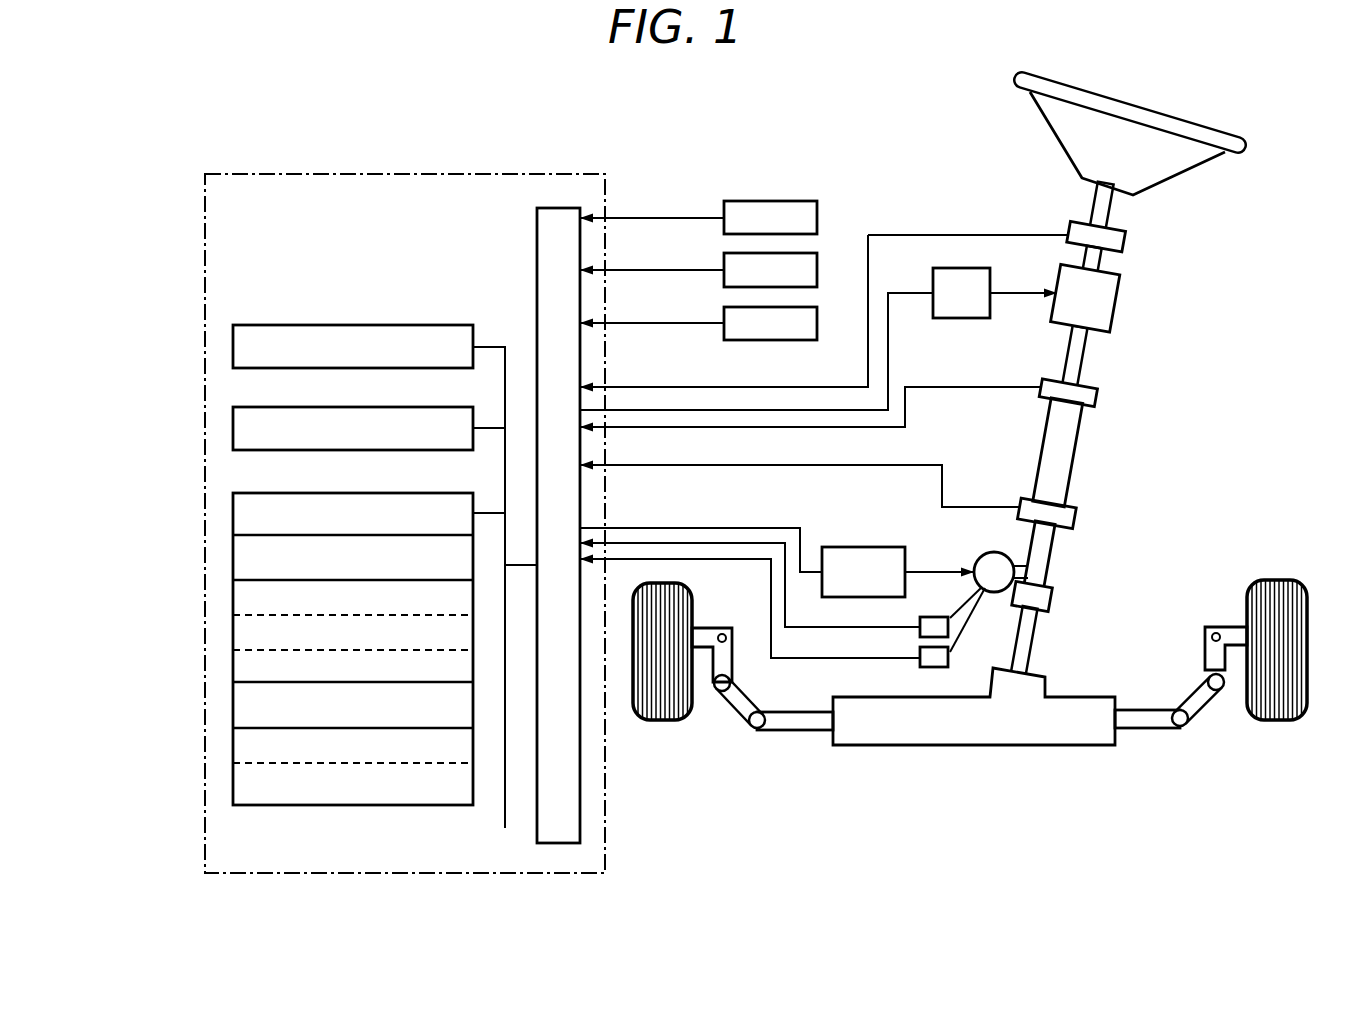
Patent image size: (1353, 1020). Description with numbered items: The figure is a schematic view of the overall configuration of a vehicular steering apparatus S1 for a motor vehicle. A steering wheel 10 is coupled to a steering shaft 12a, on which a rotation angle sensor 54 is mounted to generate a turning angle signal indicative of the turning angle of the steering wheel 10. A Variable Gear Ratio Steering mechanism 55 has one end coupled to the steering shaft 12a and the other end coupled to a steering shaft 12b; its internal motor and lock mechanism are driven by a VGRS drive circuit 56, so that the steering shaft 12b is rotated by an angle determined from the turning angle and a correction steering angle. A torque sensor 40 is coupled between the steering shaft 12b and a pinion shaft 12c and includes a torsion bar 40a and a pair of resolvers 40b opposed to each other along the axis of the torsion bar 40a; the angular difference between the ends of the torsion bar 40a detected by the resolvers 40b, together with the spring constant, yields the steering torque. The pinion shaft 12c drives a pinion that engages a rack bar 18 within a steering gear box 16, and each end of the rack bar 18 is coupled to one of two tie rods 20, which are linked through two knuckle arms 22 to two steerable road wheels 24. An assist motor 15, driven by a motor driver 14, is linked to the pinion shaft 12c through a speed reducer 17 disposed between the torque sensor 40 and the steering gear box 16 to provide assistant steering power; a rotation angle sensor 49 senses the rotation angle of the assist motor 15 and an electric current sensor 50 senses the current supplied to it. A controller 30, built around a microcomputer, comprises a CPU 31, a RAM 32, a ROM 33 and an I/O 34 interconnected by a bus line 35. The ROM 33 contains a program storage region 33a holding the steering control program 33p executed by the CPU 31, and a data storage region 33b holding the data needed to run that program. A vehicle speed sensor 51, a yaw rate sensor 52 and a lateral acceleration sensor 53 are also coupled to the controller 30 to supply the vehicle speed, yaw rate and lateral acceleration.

The steering wheel 10 is at (1183, 122).
The steering shaft 12a is at (1095, 198).
The steering shaft 12b is at (1088, 349).
The pinion shaft 12c is at (1030, 648).
The motor driver 14 is at (878, 547).
The assist motor 15 is at (990, 553).
The steering gear box 16 is at (1030, 745).
The speed reducer 17 is at (1052, 597).
The rack bar 18 is at (788, 725).
The tie rods 20 is at (735, 705).
The knuckle arms 22 is at (705, 632).
The steerable road wheels 24 is at (653, 720).
The controller 30 is at (218, 174).
The CPU 31 is at (258, 324).
The RAM 32 is at (258, 407).
The ROM 33 is at (258, 493).
The program storage region 33a is at (233, 562).
The steering control program 33p is at (233, 597).
The data storage region 33b is at (233, 707).
The I/O 34 is at (537, 836).
The bus line 35 is at (505, 808).
The torque sensor 40 is at (896, 454).
The torsion bar 40a is at (1073, 455).
The resolvers 40b is at (1098, 397).
The rotation angle sensor 49 is at (938, 617).
The electric current sensor 50 is at (948, 662).
The vehicle speed sensor 51 is at (808, 340).
The yaw rate sensor 52 is at (817, 260).
The lateral acceleration sensor 53 is at (805, 201).
The rotation angle sensor 54 is at (1128, 243).
The Variable Gear Ratio Steering (VGRS) mechanism 55 is at (1118, 300).
The VGRS drive circuit 56 is at (978, 318).
The steering apparatus S1 is at (655, 170).